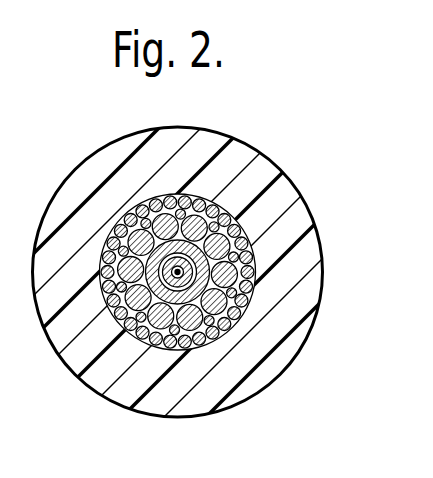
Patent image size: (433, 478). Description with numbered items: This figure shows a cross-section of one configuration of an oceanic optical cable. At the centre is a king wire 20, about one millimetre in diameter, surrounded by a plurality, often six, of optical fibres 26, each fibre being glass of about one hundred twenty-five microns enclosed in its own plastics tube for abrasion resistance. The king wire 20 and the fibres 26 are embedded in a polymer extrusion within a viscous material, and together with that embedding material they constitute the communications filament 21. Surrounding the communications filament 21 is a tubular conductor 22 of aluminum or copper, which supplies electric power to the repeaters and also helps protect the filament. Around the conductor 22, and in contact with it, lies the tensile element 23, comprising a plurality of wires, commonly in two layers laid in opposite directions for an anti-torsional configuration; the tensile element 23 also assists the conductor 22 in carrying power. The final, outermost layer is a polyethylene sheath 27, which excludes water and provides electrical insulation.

The king wire 20 is at (233, 236).
The communications filament 21 is at (229, 267).
The tubular conductor 22 is at (127, 323).
The tensile element 23 is at (141, 191).
The optical fibres 26 is at (214, 334).
The polyethylene sheath 27 is at (253, 175).